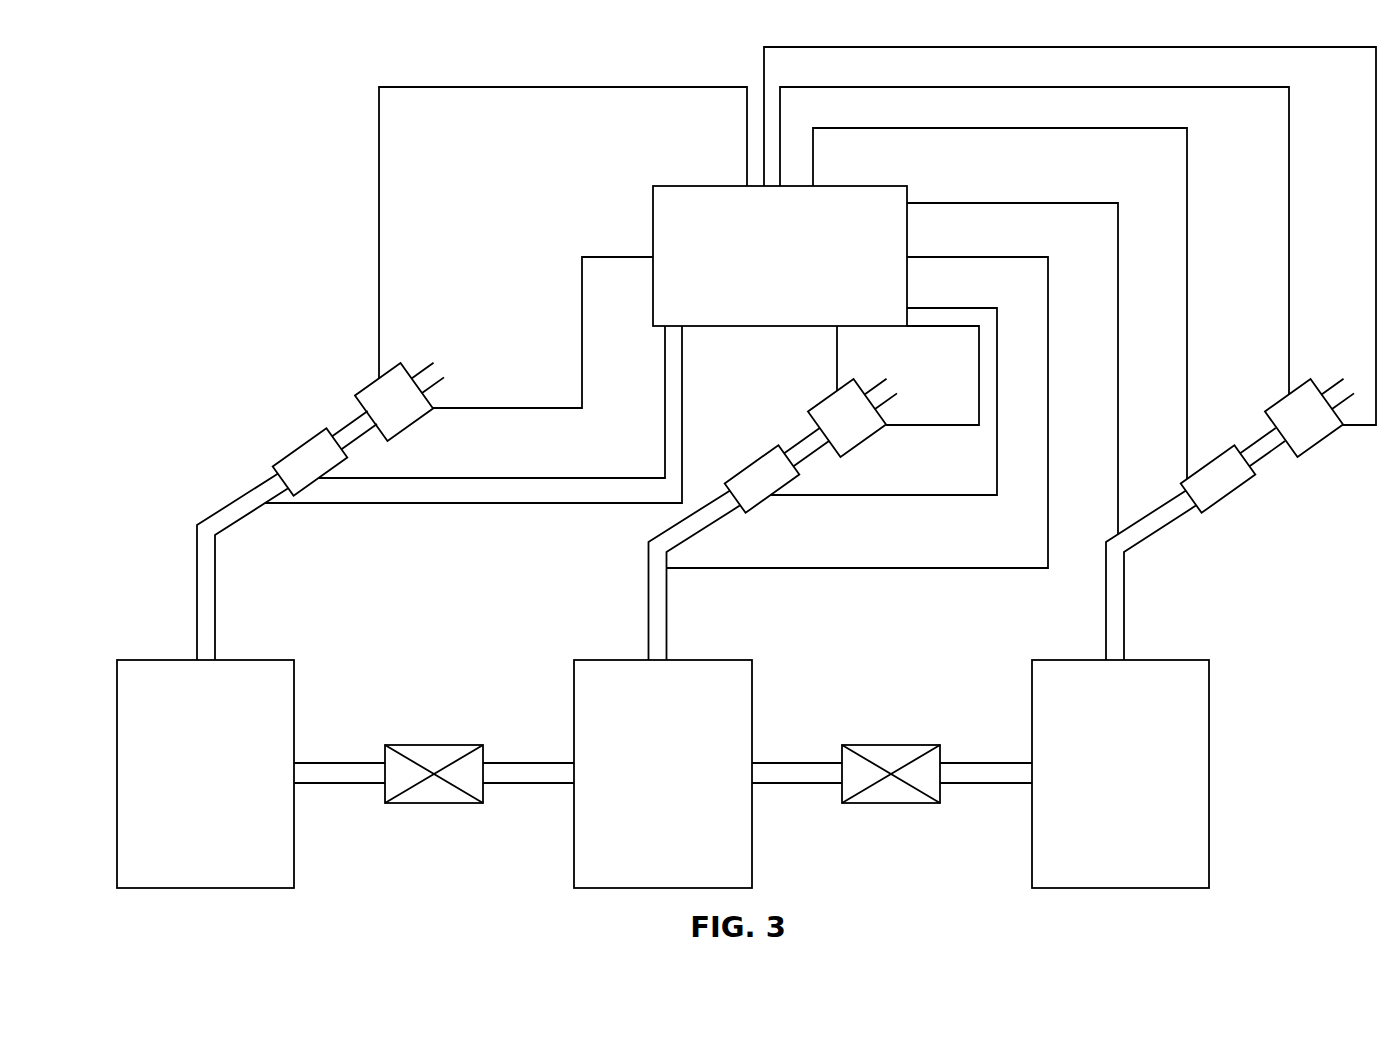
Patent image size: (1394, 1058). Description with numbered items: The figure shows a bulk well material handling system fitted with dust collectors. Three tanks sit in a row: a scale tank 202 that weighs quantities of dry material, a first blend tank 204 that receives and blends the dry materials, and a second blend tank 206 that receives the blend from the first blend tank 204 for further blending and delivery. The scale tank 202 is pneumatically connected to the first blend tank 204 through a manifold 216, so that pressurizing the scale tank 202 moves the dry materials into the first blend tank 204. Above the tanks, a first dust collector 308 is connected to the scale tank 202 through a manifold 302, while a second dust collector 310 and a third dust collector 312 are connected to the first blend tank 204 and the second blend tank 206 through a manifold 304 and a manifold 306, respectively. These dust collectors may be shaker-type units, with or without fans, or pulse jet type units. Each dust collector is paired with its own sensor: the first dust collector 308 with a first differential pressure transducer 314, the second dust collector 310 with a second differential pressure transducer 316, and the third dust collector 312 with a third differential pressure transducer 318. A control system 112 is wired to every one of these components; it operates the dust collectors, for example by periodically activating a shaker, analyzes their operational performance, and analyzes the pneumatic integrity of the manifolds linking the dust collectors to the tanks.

The control system 112 is at (718, 185).
The scale tank 202 is at (183, 658).
The first blend tank 204 is at (642, 658).
The second blend tank 206 is at (1100, 658).
The manifold 216 is at (357, 787).
The manifold 302 is at (215, 598).
The manifold 304 is at (668, 613).
The manifold 306 is at (1125, 607).
The first dust collector 308 is at (300, 450).
The second dust collector 310 is at (760, 462).
The third dust collector 312 is at (1238, 482).
The first differential pressure transducer 314 is at (410, 428).
The second differential pressure transducer 316 is at (873, 438).
The third differential pressure transducer 318 is at (1285, 397).